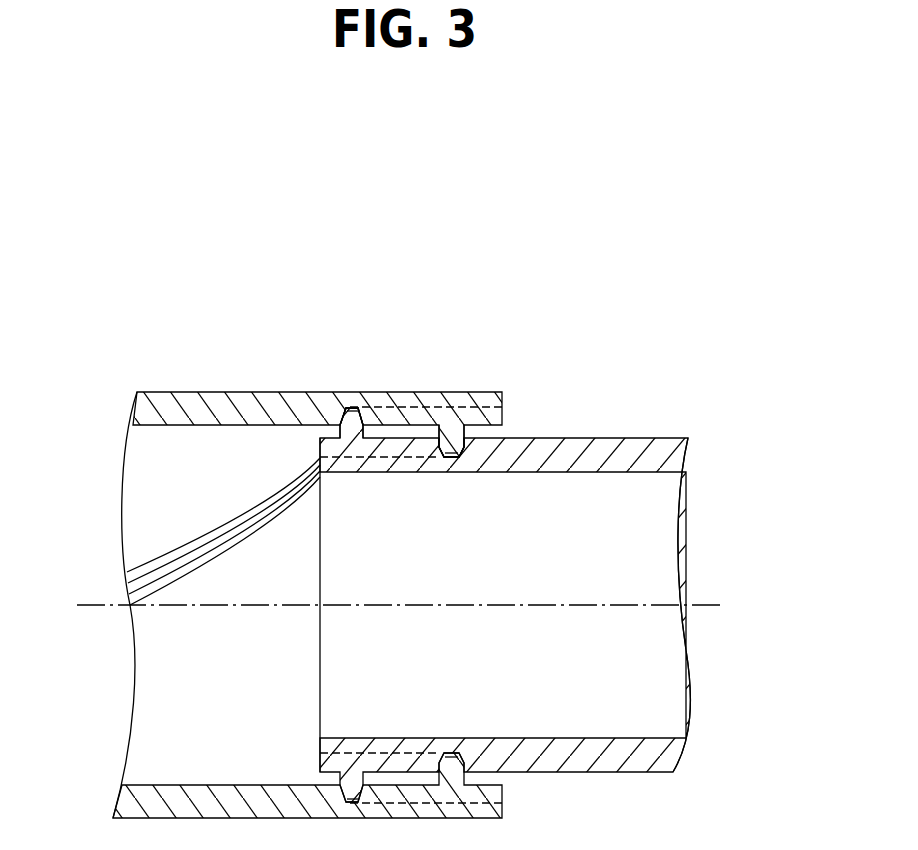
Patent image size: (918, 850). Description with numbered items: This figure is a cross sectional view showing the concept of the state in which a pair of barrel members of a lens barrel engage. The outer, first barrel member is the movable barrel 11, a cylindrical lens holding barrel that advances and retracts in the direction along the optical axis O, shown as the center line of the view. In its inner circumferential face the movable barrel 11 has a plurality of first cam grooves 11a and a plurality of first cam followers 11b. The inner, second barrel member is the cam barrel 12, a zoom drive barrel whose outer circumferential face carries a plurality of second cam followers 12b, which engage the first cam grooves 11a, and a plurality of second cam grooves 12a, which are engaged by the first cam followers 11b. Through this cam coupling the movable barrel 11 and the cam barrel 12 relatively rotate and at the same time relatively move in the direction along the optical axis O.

The movable barrel 11 is at (216, 392).
The first cam groove 11a is at (353, 409).
The first cam follower 11b is at (448, 442).
The cam barrel 12 is at (611, 438).
The second cam groove 12a is at (452, 470).
The second cam follower 12b is at (341, 418).
The optical axis O is at (80, 603).